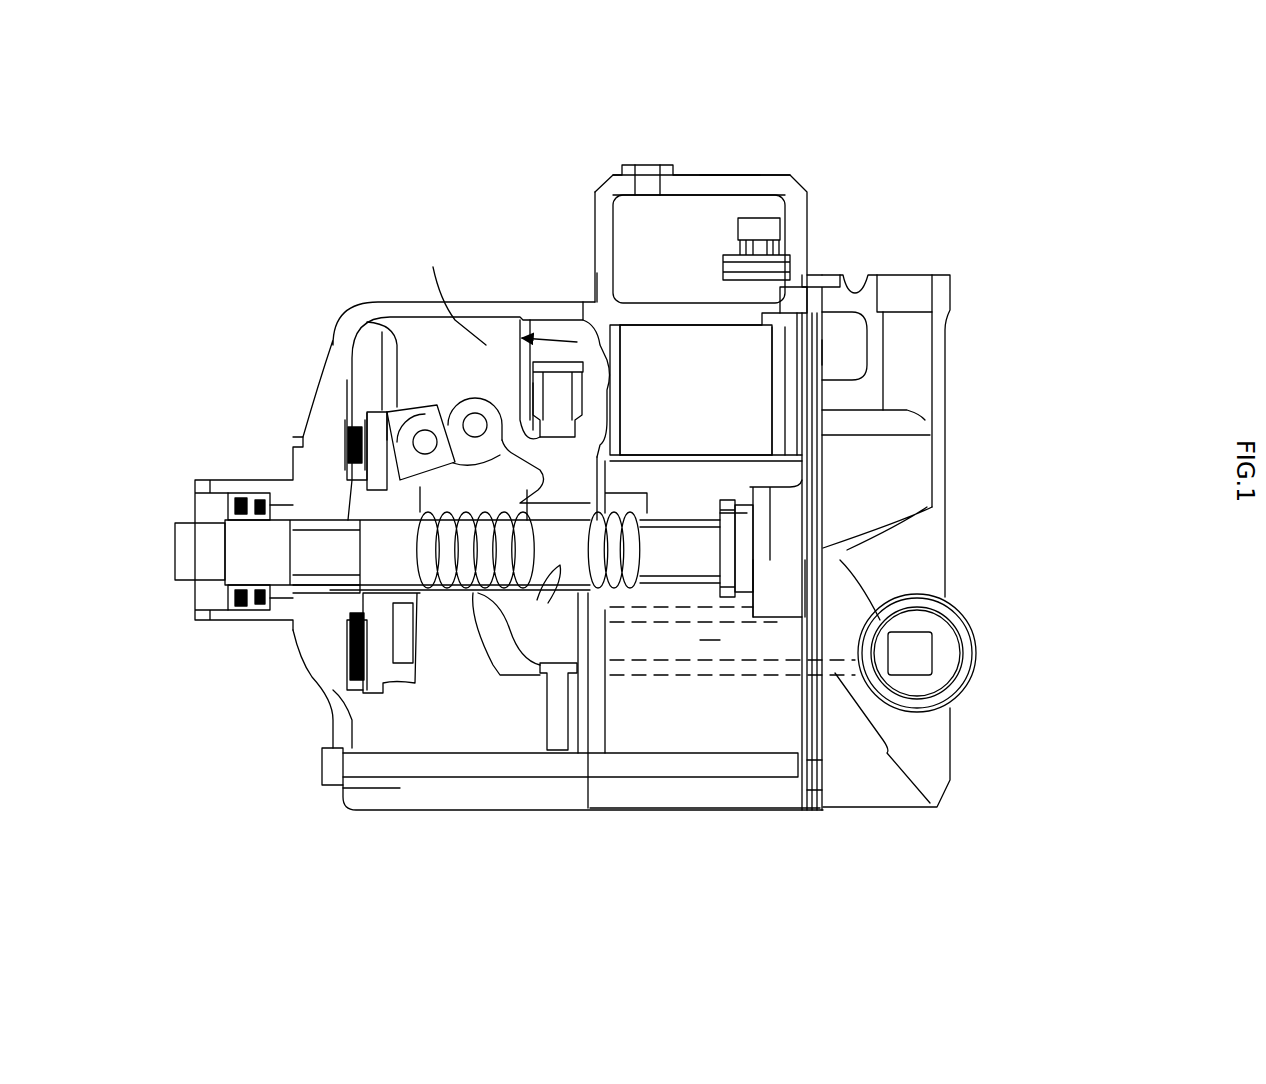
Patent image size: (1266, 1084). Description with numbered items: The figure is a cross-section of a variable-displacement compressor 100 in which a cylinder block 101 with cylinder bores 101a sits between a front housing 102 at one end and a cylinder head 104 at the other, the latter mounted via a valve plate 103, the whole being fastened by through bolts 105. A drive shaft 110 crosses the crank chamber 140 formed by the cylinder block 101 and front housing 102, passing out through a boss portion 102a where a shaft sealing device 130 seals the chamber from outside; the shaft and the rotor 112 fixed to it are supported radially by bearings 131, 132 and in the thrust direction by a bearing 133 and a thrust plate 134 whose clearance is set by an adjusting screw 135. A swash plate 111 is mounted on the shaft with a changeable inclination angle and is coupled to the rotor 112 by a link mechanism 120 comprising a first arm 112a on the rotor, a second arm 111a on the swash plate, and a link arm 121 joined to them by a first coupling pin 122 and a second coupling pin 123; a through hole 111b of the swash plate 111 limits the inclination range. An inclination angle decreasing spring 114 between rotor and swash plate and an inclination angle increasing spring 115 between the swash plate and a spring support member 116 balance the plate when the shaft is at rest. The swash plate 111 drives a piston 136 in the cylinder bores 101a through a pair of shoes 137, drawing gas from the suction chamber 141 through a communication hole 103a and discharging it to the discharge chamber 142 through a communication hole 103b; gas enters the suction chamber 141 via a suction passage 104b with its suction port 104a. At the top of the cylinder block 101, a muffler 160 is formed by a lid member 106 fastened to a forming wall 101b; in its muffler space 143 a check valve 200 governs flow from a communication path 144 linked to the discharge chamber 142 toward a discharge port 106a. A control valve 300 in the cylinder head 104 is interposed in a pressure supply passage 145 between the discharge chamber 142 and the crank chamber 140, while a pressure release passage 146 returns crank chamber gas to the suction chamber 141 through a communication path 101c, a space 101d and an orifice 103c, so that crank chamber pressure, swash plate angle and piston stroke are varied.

The variable-displacement compressor 100 is at (367, 228).
The cylinder block 101 is at (645, 810).
The cylinder bores 101a is at (650, 350).
The forming wall 101b is at (597, 273).
The communication path 101c is at (702, 625).
The space 101d is at (788, 570).
The front housing 102 is at (367, 310).
The boss portion 102a is at (250, 480).
The valve plate 103 is at (815, 277).
The communication hole 103a is at (822, 432).
The communication hole 103b is at (822, 358).
The orifice 103c is at (823, 548).
The cylinder head 104 is at (950, 747).
The suction port 104a is at (908, 290).
The suction passage 104b is at (905, 394).
The through bolts 105 is at (327, 773).
The lid member 106 is at (700, 183).
The discharge port 106a is at (650, 172).
The drive shaft 110 is at (258, 548).
The swash plate 111 is at (548, 730).
The second arm 111a is at (486, 345).
The through hole 111b is at (525, 598).
The rotor 112 is at (372, 423).
The first arm 112a is at (422, 402).
The inclination angle decreasing spring 114 is at (468, 588).
The inclination angle increasing spring 115 is at (622, 593).
The spring support member 116 is at (640, 593).
The link mechanism 120 is at (367, 417).
The link arm 121 is at (380, 340).
The first coupling pin 122 is at (427, 443).
The second coupling pin 123 is at (475, 427).
The shaft sealing device 130 is at (257, 605).
The bearing 131 is at (320, 593).
The bearing 132 is at (665, 592).
The bearing 133 is at (352, 680).
The thrust plate 134 is at (740, 592).
The adjusting screw 135 is at (765, 592).
The piston 136 is at (687, 347).
The shoes 137 is at (533, 383).
The crank chamber 140 is at (532, 735).
The suction chamber 141 is at (887, 519).
The discharge chamber 142 is at (855, 368).
The muffler space 143 is at (702, 259).
The communication path 144 is at (797, 300).
The pressure supply passage 145 is at (823, 700).
The pressure release passage 146 is at (780, 583).
The muffler 160 is at (726, 172).
The check valve 200 is at (762, 226).
The control valve 300 is at (977, 672).